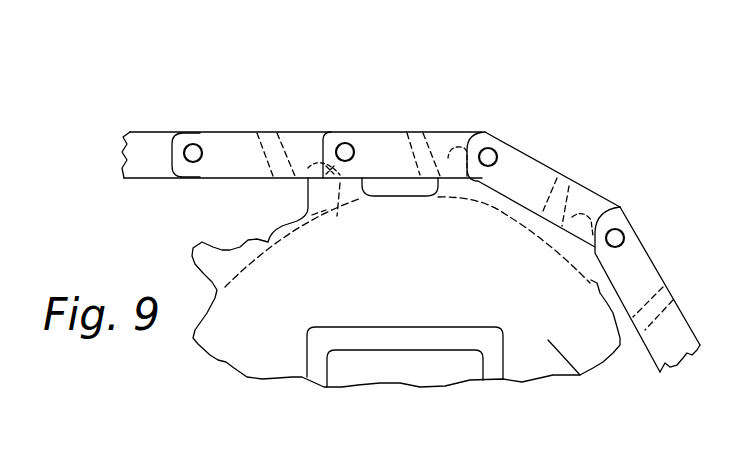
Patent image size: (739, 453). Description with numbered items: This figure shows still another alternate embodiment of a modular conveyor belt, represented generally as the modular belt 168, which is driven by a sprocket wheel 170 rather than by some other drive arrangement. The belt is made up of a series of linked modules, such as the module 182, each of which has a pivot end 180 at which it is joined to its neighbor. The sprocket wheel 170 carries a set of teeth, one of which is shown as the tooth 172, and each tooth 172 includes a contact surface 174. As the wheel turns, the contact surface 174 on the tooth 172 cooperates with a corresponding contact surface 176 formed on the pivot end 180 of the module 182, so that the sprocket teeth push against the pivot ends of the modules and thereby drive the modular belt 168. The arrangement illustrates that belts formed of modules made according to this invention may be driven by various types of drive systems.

The modular belt 168 is at (600, 178).
The sprocket wheel 170 is at (580, 375).
The tooth 172 is at (352, 187).
The contact surface 174 is at (337, 218).
The contact surface 176 is at (322, 143).
The pivot end 180 is at (350, 133).
The module 182 is at (390, 140).